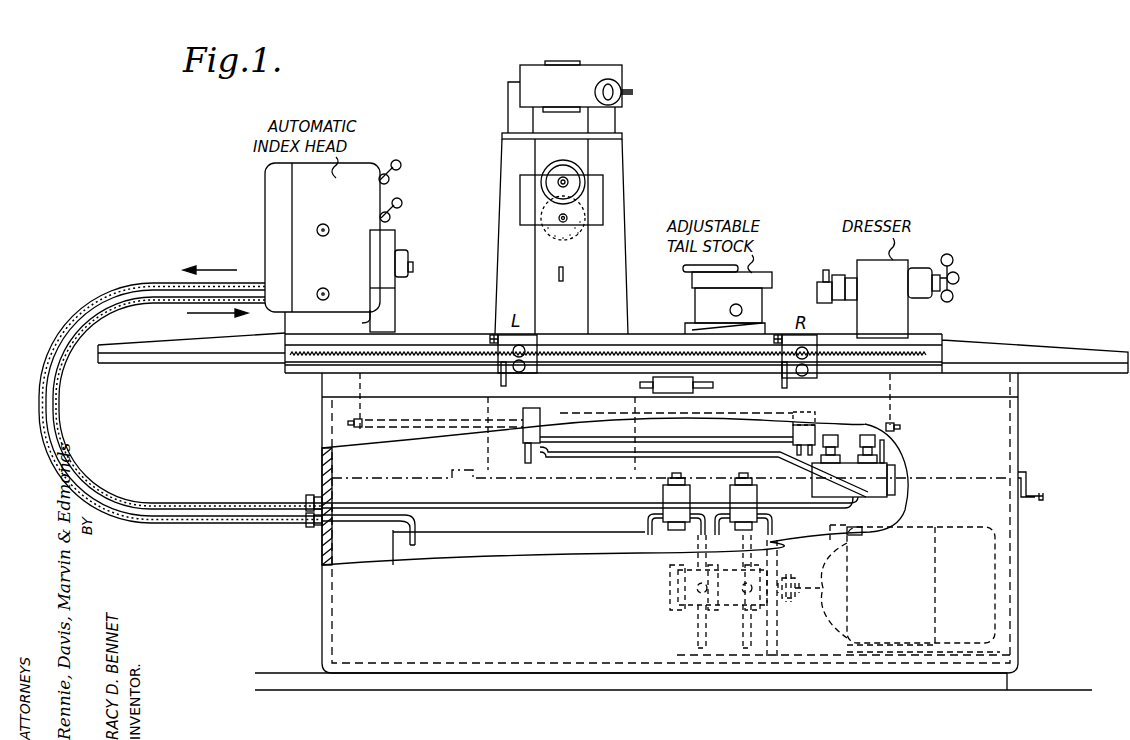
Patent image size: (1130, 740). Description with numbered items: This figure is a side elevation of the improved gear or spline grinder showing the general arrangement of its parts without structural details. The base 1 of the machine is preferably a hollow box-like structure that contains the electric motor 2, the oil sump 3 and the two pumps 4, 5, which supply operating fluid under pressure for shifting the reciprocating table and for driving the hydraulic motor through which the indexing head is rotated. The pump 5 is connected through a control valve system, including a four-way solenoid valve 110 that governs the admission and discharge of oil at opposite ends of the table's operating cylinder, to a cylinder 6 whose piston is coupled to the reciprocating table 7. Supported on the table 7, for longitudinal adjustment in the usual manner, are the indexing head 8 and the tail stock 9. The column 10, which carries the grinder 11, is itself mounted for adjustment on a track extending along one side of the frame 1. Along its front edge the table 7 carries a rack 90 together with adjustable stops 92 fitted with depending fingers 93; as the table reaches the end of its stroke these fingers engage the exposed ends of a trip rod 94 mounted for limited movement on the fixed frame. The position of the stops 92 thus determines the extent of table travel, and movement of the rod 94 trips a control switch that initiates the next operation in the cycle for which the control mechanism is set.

The base 1 is at (1020, 437).
The electric motor 2 is at (948, 540).
The oil sump 3 is at (393, 545).
The pump 4 is at (695, 565).
The pump 5 is at (760, 570).
The cylinder 6 is at (522, 436).
The reciprocating table 7 is at (278, 363).
The indexing head 8 is at (300, 195).
The tail stock 9 is at (760, 285).
The column 10 is at (613, 193).
The grinder 11 is at (573, 238).
The rack 90 is at (925, 357).
The adjustable stops 92 is at (535, 373).
The depending fingers 93 is at (500, 381).
The trip rod 94 is at (713, 386).
The four-way solenoid valve 110 is at (876, 497).